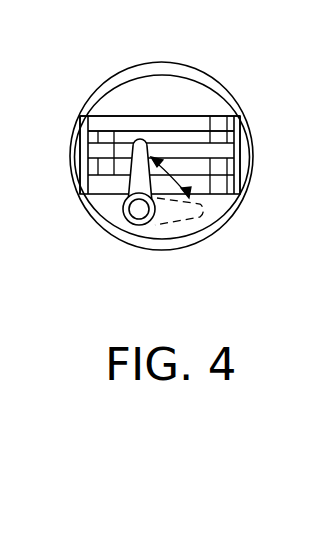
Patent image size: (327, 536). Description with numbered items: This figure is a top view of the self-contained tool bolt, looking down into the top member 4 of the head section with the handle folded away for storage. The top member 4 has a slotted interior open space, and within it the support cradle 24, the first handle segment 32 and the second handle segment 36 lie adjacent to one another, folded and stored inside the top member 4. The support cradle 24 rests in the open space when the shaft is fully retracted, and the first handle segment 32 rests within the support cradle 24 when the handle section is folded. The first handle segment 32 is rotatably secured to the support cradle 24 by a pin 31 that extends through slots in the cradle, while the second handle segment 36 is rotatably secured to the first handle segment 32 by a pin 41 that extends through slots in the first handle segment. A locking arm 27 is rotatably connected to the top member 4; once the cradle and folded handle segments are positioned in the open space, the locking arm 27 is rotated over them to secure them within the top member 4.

The top member 4 is at (178, 62).
The support cradle 24 is at (140, 127).
The locking arm 27 is at (137, 182).
The pin 31 is at (228, 141).
The first handle segment 32 is at (185, 130).
The second handle segment 36 is at (192, 155).
The pin 41 is at (103, 156).